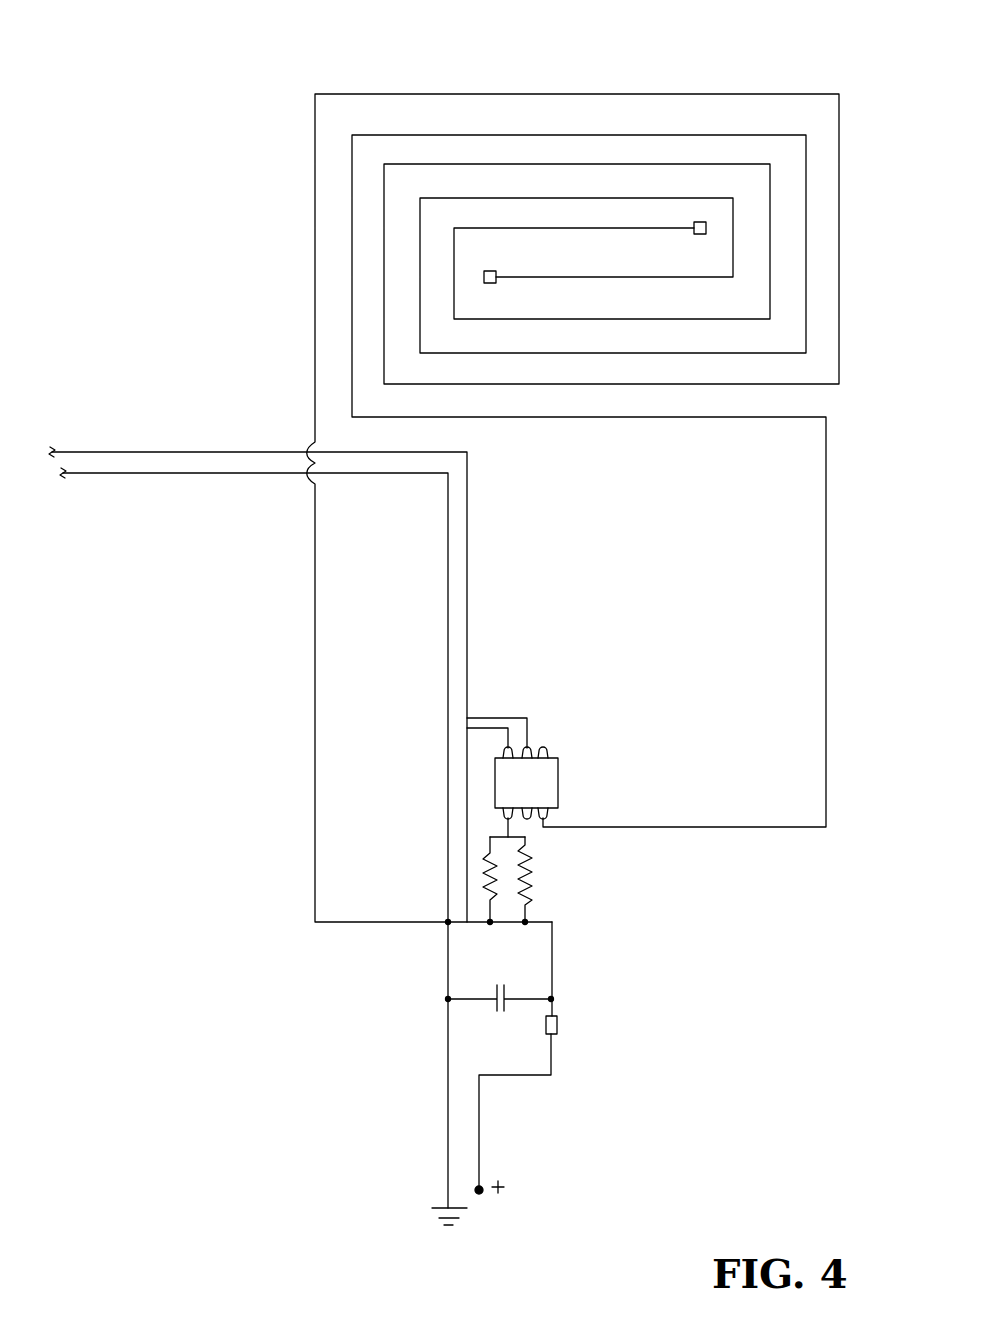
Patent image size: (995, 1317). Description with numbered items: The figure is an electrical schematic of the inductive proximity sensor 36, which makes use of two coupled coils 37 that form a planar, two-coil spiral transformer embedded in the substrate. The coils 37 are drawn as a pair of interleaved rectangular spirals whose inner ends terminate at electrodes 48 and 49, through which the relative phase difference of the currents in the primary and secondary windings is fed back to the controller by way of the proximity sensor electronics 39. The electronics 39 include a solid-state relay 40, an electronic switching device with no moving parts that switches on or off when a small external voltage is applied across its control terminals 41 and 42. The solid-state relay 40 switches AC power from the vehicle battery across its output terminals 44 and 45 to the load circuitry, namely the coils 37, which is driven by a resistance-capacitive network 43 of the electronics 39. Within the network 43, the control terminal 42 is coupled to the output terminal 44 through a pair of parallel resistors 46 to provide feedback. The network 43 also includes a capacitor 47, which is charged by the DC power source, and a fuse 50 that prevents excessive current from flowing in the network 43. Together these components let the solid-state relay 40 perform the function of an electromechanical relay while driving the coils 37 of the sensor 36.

The inductive proximity sensor 36 is at (663, 96).
The coupled coils 37 is at (781, 94).
The proximity sensor electronics 39 is at (600, 925).
The solid-state relay 40 is at (560, 780).
The control terminal 41 is at (531, 748).
The control terminal 42 is at (502, 750).
The resistance-capacitive network 43 is at (520, 1050).
The output terminal 44 is at (504, 816).
The output terminal 45 is at (534, 820).
The parallel resistors 46 is at (492, 858).
The capacitor 47 is at (493, 992).
The electrode 48 is at (498, 266).
The electrode 49 is at (698, 240).
The fuse 50 is at (560, 1024).